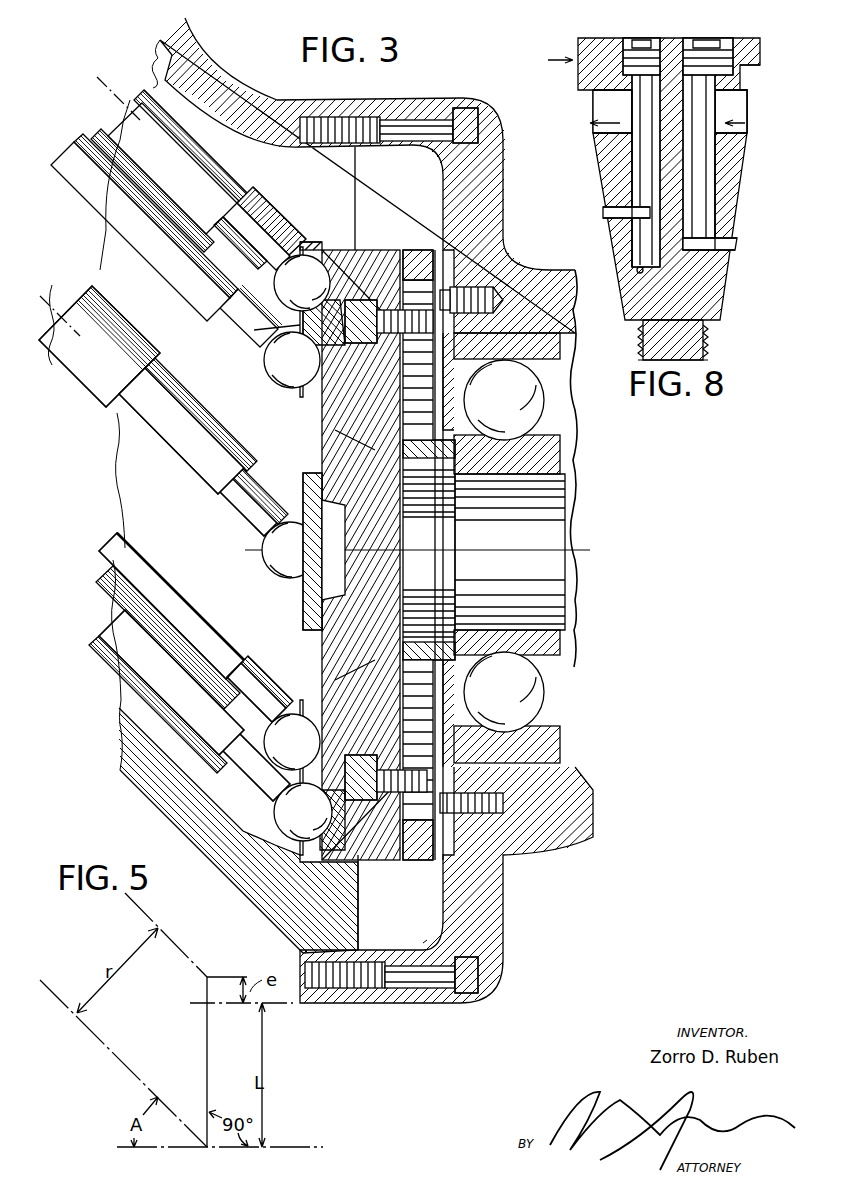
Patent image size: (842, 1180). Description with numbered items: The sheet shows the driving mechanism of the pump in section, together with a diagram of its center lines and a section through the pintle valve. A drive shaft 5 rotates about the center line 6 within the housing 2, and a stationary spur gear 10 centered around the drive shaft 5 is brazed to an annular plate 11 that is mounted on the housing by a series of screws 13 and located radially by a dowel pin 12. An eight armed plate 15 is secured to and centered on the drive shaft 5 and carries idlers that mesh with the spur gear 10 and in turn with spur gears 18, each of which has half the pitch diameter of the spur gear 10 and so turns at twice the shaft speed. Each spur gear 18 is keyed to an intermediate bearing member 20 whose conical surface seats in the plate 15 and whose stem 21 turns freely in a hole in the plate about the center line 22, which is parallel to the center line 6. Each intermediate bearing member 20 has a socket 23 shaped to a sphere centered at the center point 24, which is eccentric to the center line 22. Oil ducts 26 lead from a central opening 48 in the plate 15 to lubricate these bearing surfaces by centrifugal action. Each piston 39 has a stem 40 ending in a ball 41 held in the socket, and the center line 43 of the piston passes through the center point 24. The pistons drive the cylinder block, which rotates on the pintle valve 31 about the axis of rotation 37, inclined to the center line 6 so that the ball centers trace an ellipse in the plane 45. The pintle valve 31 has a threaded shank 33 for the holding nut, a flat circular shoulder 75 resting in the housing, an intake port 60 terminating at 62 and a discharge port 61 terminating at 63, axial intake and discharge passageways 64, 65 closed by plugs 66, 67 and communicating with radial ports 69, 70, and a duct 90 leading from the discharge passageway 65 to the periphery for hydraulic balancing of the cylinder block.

In FIG. 8, the housing 2 is at (745, 200).
In FIG. 3, the drive shaft 5 is at (555, 585).
In FIG. 3, the center line 6 is at (590, 550).
In FIG. 5, the center line 6 is at (275, 1147).
In FIG. 3, the stationary spur gear 10 is at (418, 448).
In FIG. 3, the annular plate 11 is at (458, 262).
In FIG. 3, the dowel pin 12 is at (480, 800).
In FIG. 3, the screws 13 is at (477, 272).
In FIG. 3, the eight armed plate 15 is at (372, 566).
In FIG. 3, the spur gear 18 is at (428, 268).
In FIG. 3, the intermediate bearing member 20 is at (340, 250).
In FIG. 3, the stem 21 is at (383, 293).
In FIG. 3, the center line 22 is at (300, 352).
In FIG. 5, the center line 22 is at (290, 1003).
In FIG. 3, the socket 23 is at (254, 330).
In FIG. 3, the center point 24 is at (296, 283).
In FIG. 5, the center point 24 is at (210, 975).
In FIG. 3, the oil ducts 26 is at (322, 455).
In FIG. 8, the pintle valve 31 is at (527, 61).
In FIG. 8, the threaded shank 33 is at (710, 342).
In FIG. 3, the axis of rotation 37 is at (52, 305).
In FIG. 5, the axis of rotation 37 is at (92, 1020).
In FIG. 3, the piston 39 is at (205, 185).
In FIG. 3, the stem 40 is at (262, 210).
In FIG. 3, the ball 41 is at (292, 250).
In FIG. 3, the center line 43 is at (118, 100).
In FIG. 5, the center line 43 is at (155, 920).
In FIG. 5, the plane 45 is at (208, 1078).
In FIG. 3, the central opening 48 is at (330, 580).
In FIG. 8, the intake port 60 is at (718, 243).
In FIG. 8, the discharge port 61 is at (612, 210).
In FIG. 8, the slot termination 62 is at (705, 252).
In FIG. 8, the slot termination 63 is at (622, 222).
In FIG. 8, the intake passageway 64 is at (710, 162).
In FIG. 8, the discharge passageway 65 is at (630, 158).
In FIG. 8, the plug 66 is at (695, 45).
In FIG. 8, the plug 67 is at (645, 40).
In FIG. 8, the radial port 69 is at (730, 102).
In FIG. 8, the radial port 70 is at (623, 100).
In FIG. 8, the flat circular shoulder 75 is at (752, 66).
In FIG. 8, the duct 90 is at (637, 273).